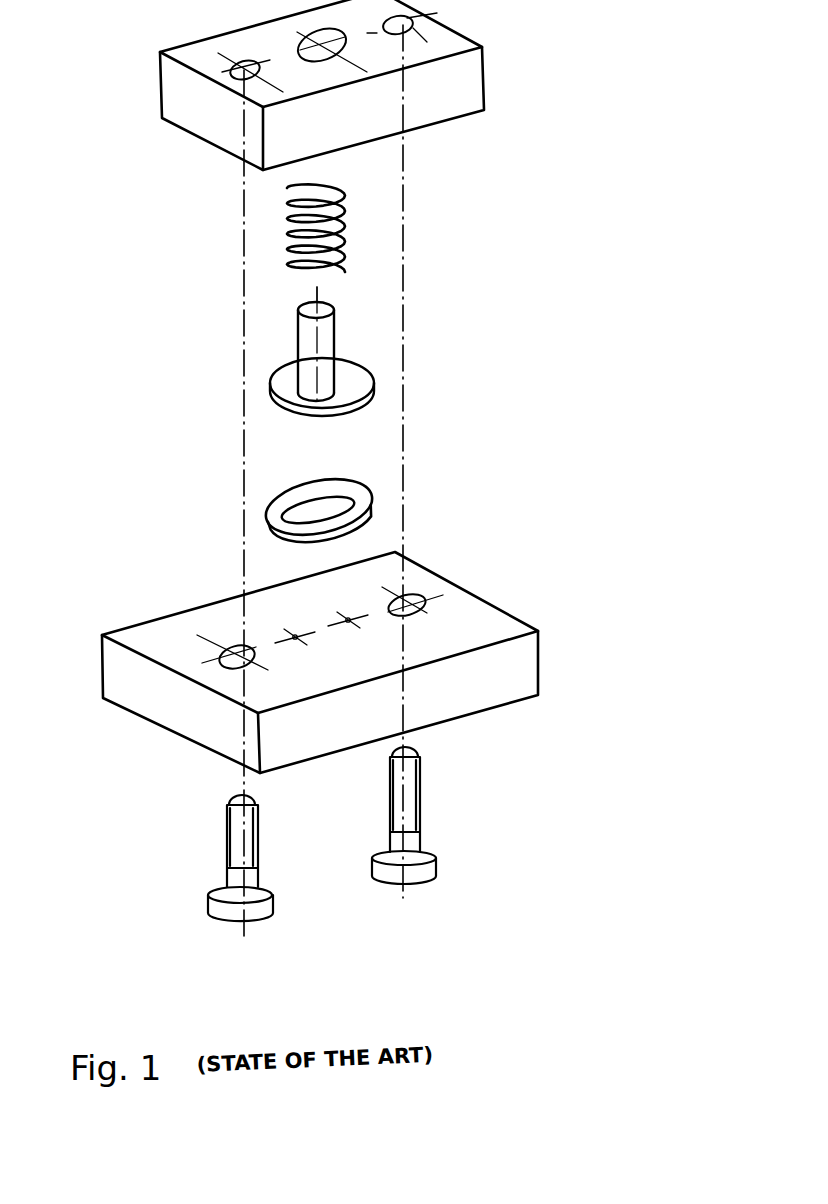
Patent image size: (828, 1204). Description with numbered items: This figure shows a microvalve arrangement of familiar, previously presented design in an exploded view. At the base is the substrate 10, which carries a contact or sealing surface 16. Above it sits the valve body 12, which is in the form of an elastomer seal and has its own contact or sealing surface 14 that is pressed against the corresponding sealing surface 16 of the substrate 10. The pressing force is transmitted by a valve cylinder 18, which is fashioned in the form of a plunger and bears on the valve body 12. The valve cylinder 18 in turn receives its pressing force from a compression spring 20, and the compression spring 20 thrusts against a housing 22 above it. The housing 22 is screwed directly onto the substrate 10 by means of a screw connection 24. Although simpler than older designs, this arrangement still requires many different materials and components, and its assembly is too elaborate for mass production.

The substrate 10 is at (379, 660).
The valve body 12 is at (427, 499).
The sealing surface 14 is at (362, 530).
The sealing surface 16 is at (358, 605).
The valve cylinder 18 is at (362, 372).
The compression spring 20 is at (345, 233).
The housing 22 is at (482, 82).
The screw connection 24 is at (273, 903).